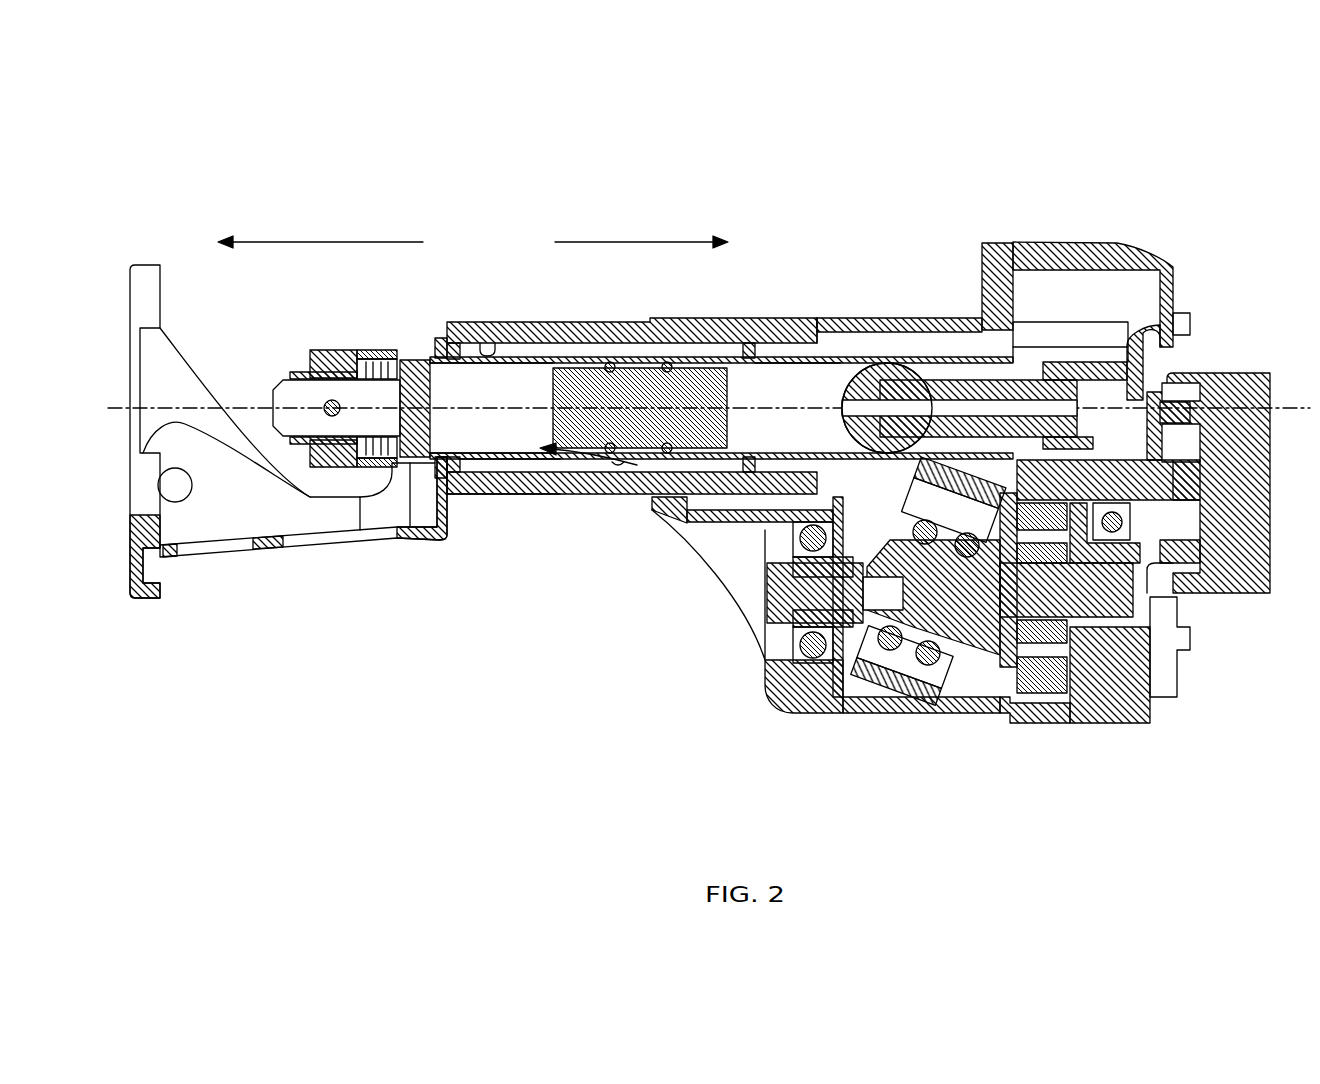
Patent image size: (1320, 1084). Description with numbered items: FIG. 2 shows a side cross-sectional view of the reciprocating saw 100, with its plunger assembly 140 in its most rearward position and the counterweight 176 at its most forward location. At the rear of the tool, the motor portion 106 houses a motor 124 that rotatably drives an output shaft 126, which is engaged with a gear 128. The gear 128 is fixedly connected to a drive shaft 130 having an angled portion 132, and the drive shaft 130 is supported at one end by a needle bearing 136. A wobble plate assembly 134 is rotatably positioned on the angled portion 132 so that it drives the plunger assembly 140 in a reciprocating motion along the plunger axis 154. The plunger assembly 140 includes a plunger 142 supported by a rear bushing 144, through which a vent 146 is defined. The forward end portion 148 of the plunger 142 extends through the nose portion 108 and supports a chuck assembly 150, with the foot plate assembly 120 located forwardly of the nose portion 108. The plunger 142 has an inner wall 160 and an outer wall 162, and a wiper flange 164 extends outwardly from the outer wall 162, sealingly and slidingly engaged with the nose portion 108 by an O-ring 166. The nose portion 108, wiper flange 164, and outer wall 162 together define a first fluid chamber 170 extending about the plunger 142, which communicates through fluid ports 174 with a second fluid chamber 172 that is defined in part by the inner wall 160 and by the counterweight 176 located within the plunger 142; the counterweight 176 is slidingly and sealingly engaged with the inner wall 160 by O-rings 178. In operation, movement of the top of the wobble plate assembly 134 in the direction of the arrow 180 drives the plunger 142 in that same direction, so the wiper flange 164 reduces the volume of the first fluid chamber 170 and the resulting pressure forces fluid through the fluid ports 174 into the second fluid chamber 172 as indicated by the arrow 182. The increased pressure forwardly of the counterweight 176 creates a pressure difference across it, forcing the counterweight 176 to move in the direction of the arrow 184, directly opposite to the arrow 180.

The reciprocating saw 100 is at (770, 150).
The motor portion 106 is at (1120, 248).
The nose portion 108 is at (452, 322).
The foot plate assembly 120 is at (167, 273).
The motor 124 is at (1227, 373).
The output shaft 126 is at (1052, 365).
The gear 128 is at (1032, 700).
The drive shaft 130 is at (1078, 625).
The angled portion 132 is at (945, 690).
The wobble plate assembly 134 is at (818, 690).
The needle bearing 136 is at (1130, 570).
The plunger assembly 140 is at (738, 298).
The plunger 142 is at (770, 357).
The rear bushing 144 is at (850, 385).
The vent 146 is at (940, 410).
The forward end portion 148 is at (415, 360).
The chuck assembly 150 is at (340, 350).
The plunger axis 154 is at (243, 402).
The inner wall 160 is at (475, 495).
The outer wall 162 is at (497, 460).
The wiper flange 164 is at (735, 456).
The O-ring 166 is at (747, 458).
The first fluid chamber 170 is at (482, 343).
The second fluid chamber 172 is at (503, 401).
The fluid ports 174 is at (585, 357).
The counterweight 176 is at (643, 367).
The O-rings 178 is at (617, 465).
The arrow 180 is at (376, 242).
The arrow 182 is at (592, 462).
The arrow 184 is at (610, 242).